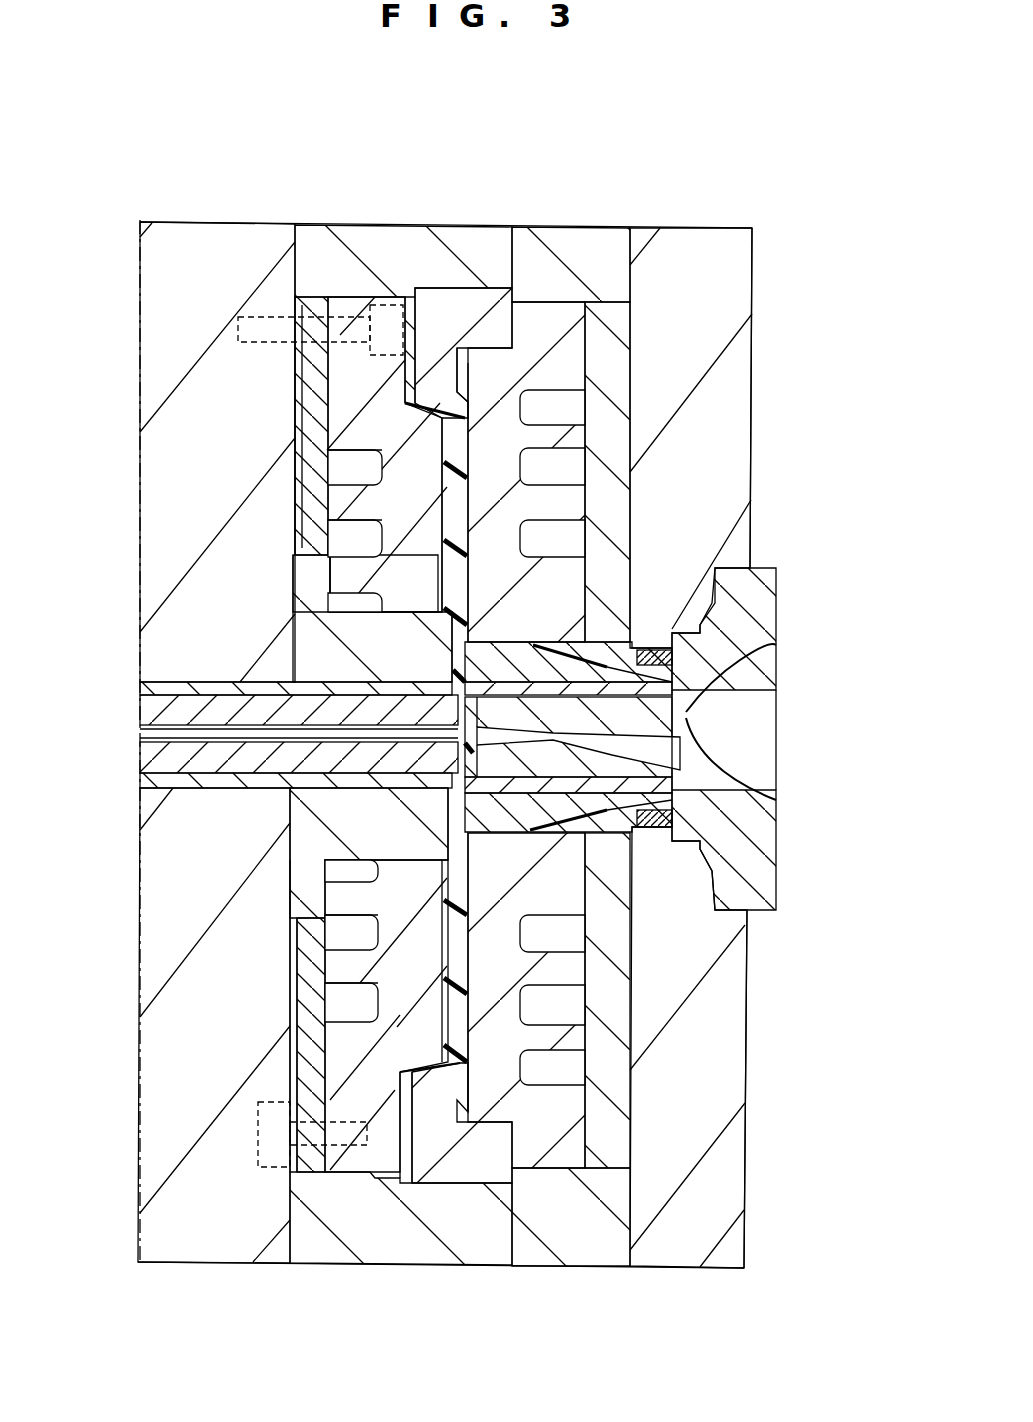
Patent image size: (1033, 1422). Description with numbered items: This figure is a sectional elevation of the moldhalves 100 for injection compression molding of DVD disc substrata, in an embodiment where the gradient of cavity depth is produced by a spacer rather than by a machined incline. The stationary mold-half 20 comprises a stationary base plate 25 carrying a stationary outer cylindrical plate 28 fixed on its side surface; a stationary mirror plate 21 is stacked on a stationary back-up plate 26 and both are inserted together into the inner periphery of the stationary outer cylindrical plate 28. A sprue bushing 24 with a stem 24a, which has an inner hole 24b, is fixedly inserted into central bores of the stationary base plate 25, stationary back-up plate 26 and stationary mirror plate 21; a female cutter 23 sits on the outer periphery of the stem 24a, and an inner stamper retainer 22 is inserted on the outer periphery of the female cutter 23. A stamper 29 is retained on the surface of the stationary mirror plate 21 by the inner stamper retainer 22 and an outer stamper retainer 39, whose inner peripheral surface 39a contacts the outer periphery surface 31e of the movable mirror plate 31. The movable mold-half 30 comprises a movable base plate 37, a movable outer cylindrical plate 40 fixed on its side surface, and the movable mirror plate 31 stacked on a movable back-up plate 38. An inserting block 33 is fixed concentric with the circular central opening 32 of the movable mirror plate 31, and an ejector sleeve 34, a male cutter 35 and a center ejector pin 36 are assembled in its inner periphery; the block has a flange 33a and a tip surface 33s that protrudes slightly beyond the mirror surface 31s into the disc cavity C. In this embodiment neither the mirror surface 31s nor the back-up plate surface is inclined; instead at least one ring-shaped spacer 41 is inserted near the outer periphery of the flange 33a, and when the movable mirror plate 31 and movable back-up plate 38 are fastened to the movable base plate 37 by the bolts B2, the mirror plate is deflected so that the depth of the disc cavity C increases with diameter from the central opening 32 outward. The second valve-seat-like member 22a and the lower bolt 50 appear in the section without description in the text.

The moldhalves 100 is at (555, 185).
The stationary mold-half 20 is at (610, 226).
The stationary mirror plate 21 is at (560, 355).
The inner stamper retainer 22 is at (555, 655).
The valve seat member (lower) 22a is at (470, 828).
The female cutter 23 is at (603, 717).
The sprue bushing 24 is at (748, 855).
The stem 24a is at (680, 762).
The inner hole 24b is at (690, 800).
The stationary base plate 25 is at (720, 440).
The stationary back-up plate 26 is at (607, 1030).
The stationary outer cylindrical plate 28 is at (585, 1245).
The stamper 29 is at (575, 498).
The movable mold-half 30 is at (396, 222).
The movable mirror plate 31 is at (357, 394).
The outer periphery surface 31e is at (432, 420).
The mirror surface 31s is at (448, 470).
The circular central opening 32 is at (410, 615).
The inserting block 33 is at (300, 620).
The flange 33a is at (298, 572).
The tip surface 33s is at (455, 665).
The ejector sleeve 34 is at (150, 688).
The male cutter 35 is at (165, 708).
The center ejector pin 36 is at (143, 778).
The movable base plate 37 is at (170, 915).
The movable back-up plate 38 is at (300, 1040).
The outer stamper retainer 39 is at (474, 300).
The inner peripheral surface 39a is at (470, 408).
The movable outer cylindrical plate 40 is at (410, 1245).
The spacer 41 is at (297, 540).
The bolt 50 is at (262, 1150).
The bolts B2 is at (256, 327).
The disc cavity C is at (480, 1080).